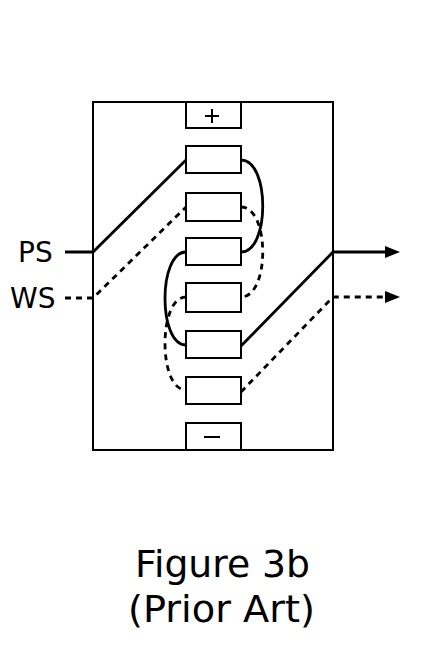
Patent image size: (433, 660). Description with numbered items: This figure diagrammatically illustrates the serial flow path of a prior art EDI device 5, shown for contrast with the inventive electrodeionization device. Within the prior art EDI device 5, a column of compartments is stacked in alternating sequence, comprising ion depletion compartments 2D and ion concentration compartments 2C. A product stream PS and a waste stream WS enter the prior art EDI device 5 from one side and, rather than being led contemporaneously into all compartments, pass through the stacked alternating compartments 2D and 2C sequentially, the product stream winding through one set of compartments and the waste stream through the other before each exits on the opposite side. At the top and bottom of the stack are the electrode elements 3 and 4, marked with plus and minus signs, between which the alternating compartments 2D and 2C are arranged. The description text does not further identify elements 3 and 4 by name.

The prior art EDI device 5 is at (240, 82).
The positive electrode 3 is at (207, 102).
The negative electrode 4 is at (210, 450).
The ion depletion compartment 2D is at (222, 146).
The ion concentration compartment 2C is at (241, 398).